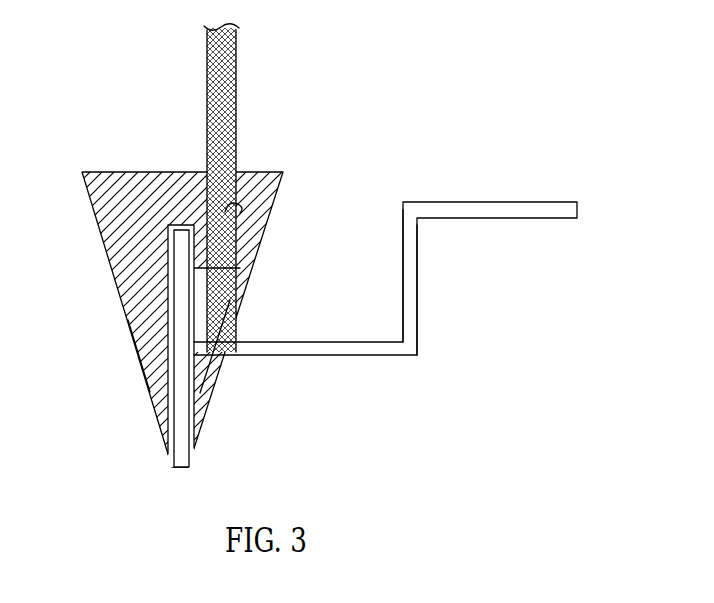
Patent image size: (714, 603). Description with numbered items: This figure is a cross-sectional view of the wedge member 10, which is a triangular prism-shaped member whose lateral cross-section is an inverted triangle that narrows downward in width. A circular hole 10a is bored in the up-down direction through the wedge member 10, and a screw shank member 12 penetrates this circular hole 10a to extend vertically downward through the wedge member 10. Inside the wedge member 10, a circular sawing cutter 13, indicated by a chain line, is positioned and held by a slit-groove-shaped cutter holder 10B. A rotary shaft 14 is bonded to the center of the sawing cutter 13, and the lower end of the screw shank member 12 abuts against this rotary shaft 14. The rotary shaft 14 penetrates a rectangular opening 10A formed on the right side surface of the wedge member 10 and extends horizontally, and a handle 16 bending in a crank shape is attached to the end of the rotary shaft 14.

The wedge member 10 is at (133, 172).
The circular hole 10a is at (240, 213).
The rectangular opening 10A is at (203, 382).
The cutter holder 10B is at (142, 340).
The screw shank member 12 is at (237, 112).
The circular sawing cutter 13 is at (166, 378).
The rotary shaft 14 is at (345, 357).
The handle 16 is at (505, 202).